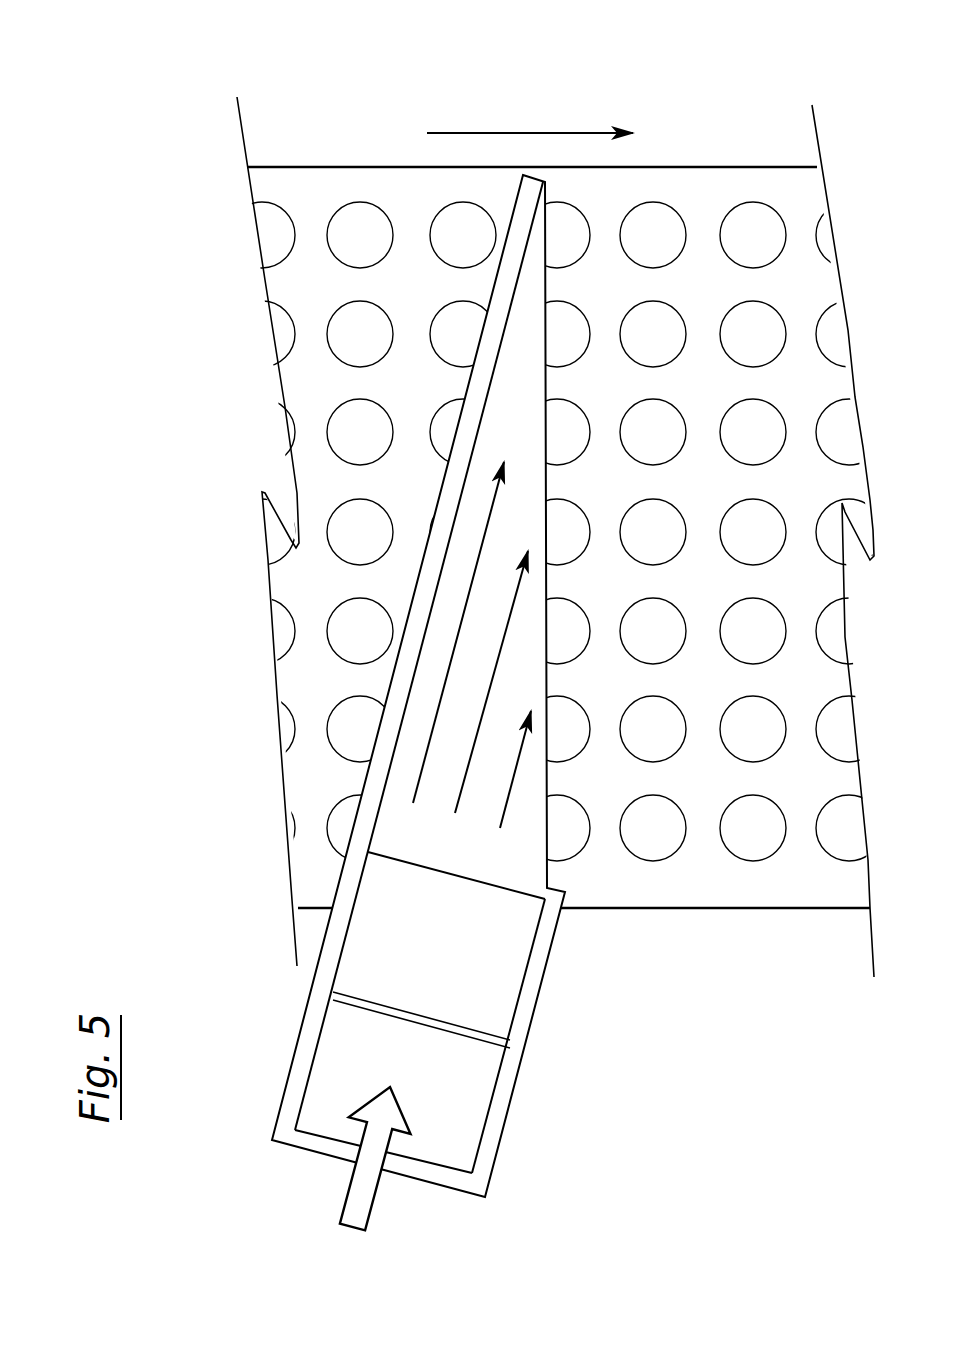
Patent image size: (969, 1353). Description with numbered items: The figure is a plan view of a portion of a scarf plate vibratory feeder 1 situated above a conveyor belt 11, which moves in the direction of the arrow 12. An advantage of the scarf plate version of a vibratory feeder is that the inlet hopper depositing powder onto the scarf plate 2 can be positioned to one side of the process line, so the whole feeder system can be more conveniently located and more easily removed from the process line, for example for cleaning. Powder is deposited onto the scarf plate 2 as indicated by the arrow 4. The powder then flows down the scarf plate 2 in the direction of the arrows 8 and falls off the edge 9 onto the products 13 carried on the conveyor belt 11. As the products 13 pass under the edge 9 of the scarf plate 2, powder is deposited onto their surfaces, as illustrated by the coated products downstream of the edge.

The vibratory feeder 1 is at (642, 1097).
The scarf plate 2 is at (333, 1075).
The arrow 4 is at (355, 1215).
The arrows 8 is at (501, 512).
The edge 9 is at (549, 675).
The conveyor belt 11 is at (318, 185).
The arrow 12 is at (498, 130).
The products 13 is at (355, 432).